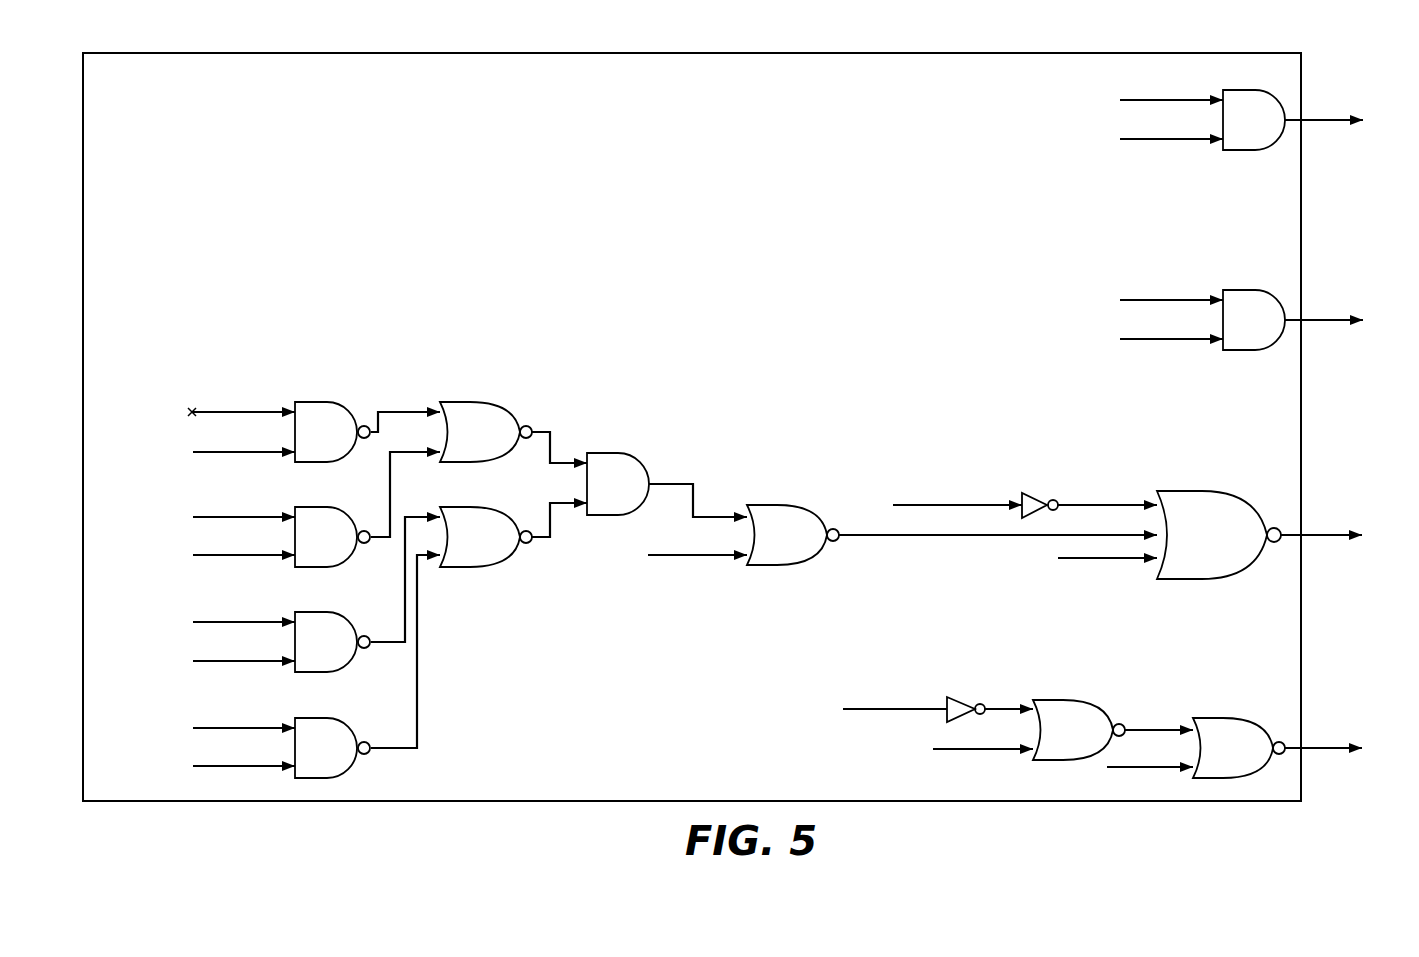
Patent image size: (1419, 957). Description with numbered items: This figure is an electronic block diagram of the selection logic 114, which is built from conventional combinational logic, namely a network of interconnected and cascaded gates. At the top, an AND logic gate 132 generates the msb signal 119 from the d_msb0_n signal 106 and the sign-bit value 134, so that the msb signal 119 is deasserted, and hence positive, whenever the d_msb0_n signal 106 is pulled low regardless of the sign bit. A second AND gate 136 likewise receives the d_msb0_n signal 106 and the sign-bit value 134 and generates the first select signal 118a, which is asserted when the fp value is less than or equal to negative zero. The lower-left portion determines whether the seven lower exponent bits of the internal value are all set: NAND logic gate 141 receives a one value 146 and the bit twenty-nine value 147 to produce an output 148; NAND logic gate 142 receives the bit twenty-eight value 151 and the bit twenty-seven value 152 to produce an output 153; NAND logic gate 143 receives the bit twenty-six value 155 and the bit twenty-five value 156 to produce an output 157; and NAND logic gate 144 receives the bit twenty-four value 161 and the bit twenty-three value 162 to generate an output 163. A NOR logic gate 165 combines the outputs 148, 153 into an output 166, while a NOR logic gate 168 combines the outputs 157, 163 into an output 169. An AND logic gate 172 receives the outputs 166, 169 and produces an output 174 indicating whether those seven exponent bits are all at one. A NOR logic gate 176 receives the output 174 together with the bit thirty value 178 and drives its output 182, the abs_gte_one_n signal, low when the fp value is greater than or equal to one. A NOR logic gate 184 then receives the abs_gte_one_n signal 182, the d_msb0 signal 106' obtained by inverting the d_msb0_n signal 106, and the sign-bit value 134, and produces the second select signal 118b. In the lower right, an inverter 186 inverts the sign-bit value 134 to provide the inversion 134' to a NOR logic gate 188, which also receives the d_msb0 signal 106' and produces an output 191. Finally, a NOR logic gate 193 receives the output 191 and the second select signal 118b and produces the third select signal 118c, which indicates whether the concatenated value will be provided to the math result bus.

The selection logic 114 is at (820, 53).
The d_msb0_n signal 106 is at (1040, 283).
The d_msb0 signal 106' is at (1017, 630).
The val_internal[31] value 134 is at (1016, 427).
The inversion of val_internal[31] 134' is at (995, 725).
The AND logic gate 132 is at (1280, 134).
The AND gate 136 is at (1280, 334).
The msb signal 119 is at (1326, 124).
The first select signal 118a is at (1326, 324).
The second select signal 118b is at (1328, 540).
The third select signal 118c is at (1326, 756).
The NAND logic gate 141 is at (352, 446).
The NAND logic gate 142 is at (352, 551).
The NAND logic gate 143 is at (352, 656).
The NAND logic gate 144 is at (352, 762).
The 1.0 value 146 is at (245, 410).
The val_internal[29] value 147 is at (215, 456).
The output of NAND logic gate 141 148 is at (402, 410).
The val_internal[28] value 151 is at (280, 506).
The val_internal[27] value 152 is at (215, 560).
The output of NAND logic gate 142 153 is at (390, 477).
The val_internal[26] value 155 is at (280, 610).
The val_internal[25] value 156 is at (215, 666).
The output of NAND logic gate 143 157 is at (405, 600).
The val_internal[24] value 161 is at (280, 714).
The val_internal[23] value 162 is at (215, 771).
The output of NAND logic gate 144 163 is at (417, 714).
The NOR logic gate 165 is at (504, 446).
The output of NOR logic gate 165 166 is at (536, 426).
The NOR logic gate 168 is at (504, 551).
The output of NOR logic gate 168 169 is at (563, 507).
The AND logic gate 172 is at (646, 498).
The output of AND logic gate 172 174 is at (712, 514).
The NOR logic gate 176 is at (812, 550).
The val_internal[30] value 178 is at (703, 554).
The abs_gte_1_n signal 182 is at (908, 540).
The NOR logic gate 184 is at (1230, 549).
The inverter 186 is at (947, 718).
The NOR logic gate 188 is at (1098, 745).
The output of NOR logic gate 188 191 is at (1148, 726).
The NOR logic gate 193 is at (1258, 763).